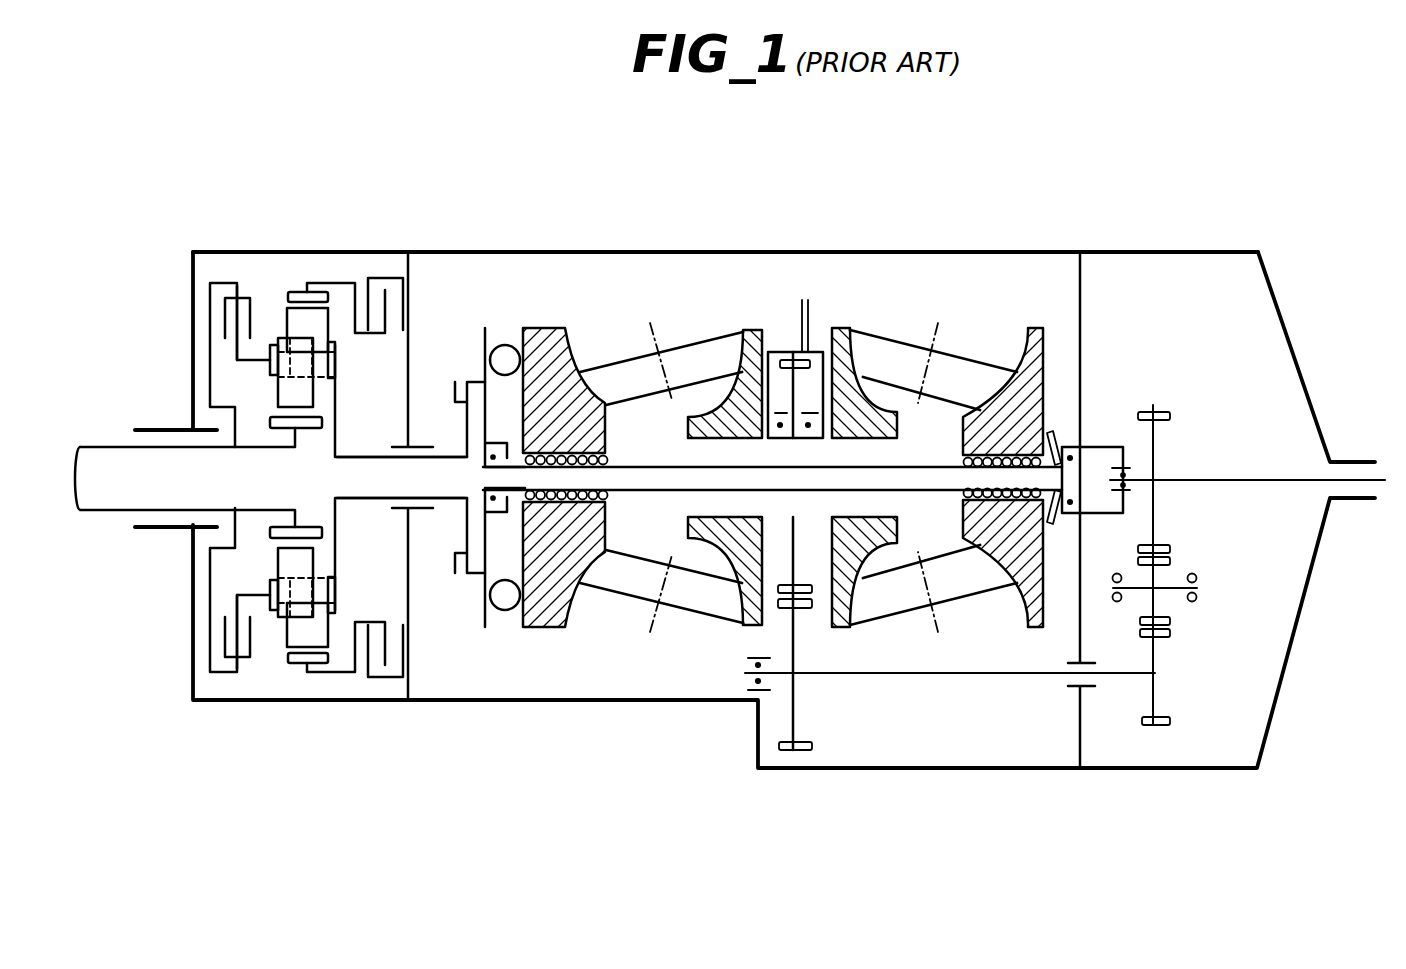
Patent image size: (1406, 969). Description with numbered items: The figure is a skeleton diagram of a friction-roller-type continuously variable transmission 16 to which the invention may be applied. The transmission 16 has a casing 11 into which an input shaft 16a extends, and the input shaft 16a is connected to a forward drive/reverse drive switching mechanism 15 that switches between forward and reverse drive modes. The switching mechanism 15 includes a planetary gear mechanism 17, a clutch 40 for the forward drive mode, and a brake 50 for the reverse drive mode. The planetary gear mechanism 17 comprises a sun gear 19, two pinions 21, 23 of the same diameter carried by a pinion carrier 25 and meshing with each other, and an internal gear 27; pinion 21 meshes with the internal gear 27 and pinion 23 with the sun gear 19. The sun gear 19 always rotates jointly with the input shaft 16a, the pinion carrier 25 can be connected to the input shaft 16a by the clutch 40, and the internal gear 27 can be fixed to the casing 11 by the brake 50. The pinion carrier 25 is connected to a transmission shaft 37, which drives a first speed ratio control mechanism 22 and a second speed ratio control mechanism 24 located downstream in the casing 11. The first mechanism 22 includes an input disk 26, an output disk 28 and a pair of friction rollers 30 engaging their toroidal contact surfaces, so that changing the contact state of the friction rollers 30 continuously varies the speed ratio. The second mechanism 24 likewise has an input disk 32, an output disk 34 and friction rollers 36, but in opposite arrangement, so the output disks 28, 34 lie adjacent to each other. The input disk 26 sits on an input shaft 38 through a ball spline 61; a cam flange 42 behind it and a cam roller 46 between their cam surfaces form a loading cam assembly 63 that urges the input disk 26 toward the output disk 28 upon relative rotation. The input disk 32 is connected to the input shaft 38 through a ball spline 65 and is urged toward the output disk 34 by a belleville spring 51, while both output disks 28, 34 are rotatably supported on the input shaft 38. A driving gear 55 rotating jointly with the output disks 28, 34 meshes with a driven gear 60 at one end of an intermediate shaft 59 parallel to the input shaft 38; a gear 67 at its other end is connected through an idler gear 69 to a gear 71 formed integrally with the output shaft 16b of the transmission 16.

The casing 11 is at (435, 702).
The forward drive/reverse drive switching mechanism 15 is at (270, 275).
The friction-roller-type continuously variable transmission 16 is at (690, 240).
The input shaft 16a is at (112, 513).
The output shaft 16b is at (1383, 478).
The planetary gear mechanism 17 is at (272, 648).
The sun gear 19 is at (310, 438).
The pinion 21 is at (328, 320).
The first speed ratio control mechanism 22 is at (597, 303).
The pinion 23 is at (278, 392).
The second speed ratio control mechanism 24 is at (884, 282).
The pinion carrier 25 is at (252, 362).
The input disk 26 is at (548, 327).
The internal gear 27 is at (303, 292).
The output disk 28 is at (762, 328).
The friction rollers 30 is at (677, 340).
The input disk 32 is at (1035, 326).
The output disk 34 is at (842, 326).
The friction rollers 36 is at (908, 340).
The transmission shaft 37 is at (363, 498).
The input shaft 38 is at (647, 493).
The clutch 40 is at (243, 300).
The cam flange 42 is at (485, 348).
The cam roller 46 is at (505, 345).
The brake 50 is at (395, 278).
The belleville spring 51 is at (1057, 433).
The driving gear 55 is at (805, 300).
The intermediate shaft 59 is at (940, 675).
The driven gear 60 is at (793, 752).
The ball spline 61 is at (605, 463).
The loading cam assembly 63 is at (483, 294).
The ball spline 65 is at (962, 492).
The gear 67 is at (1170, 722).
The idler gear 69 is at (1172, 620).
The gear 71 is at (1160, 410).